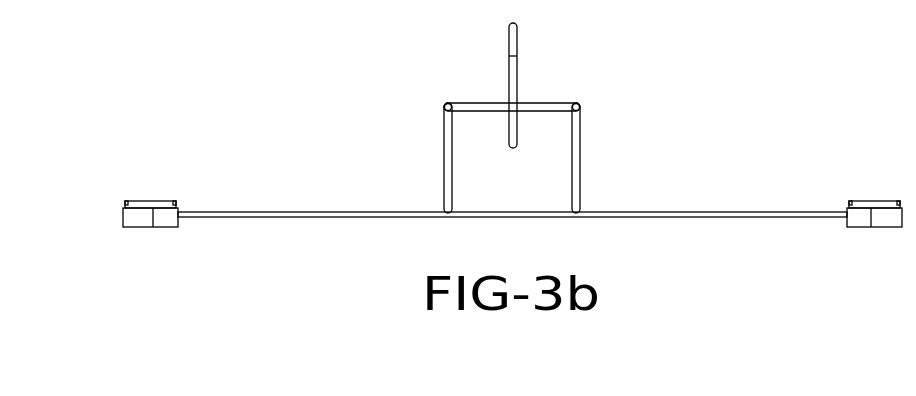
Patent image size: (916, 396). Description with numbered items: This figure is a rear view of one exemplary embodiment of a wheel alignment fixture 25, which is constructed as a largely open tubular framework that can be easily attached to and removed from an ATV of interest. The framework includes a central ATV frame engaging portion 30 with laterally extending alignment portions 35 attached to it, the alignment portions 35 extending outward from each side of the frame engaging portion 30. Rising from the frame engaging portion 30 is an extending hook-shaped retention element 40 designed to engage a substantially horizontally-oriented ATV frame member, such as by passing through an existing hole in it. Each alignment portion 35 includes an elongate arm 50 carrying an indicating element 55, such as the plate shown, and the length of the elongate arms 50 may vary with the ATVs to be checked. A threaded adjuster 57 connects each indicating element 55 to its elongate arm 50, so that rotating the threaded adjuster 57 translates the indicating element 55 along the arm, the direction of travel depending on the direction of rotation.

The wheel alignment fixture 25 is at (392, 60).
The ATV frame engaging portion 30 is at (605, 167).
The alignment portions 35 is at (282, 188).
The hook-shaped retention element 40 is at (516, 44).
The elongate arm 50 is at (265, 214).
The indicating element 55 is at (140, 218).
The threaded adjuster 57 is at (175, 204).